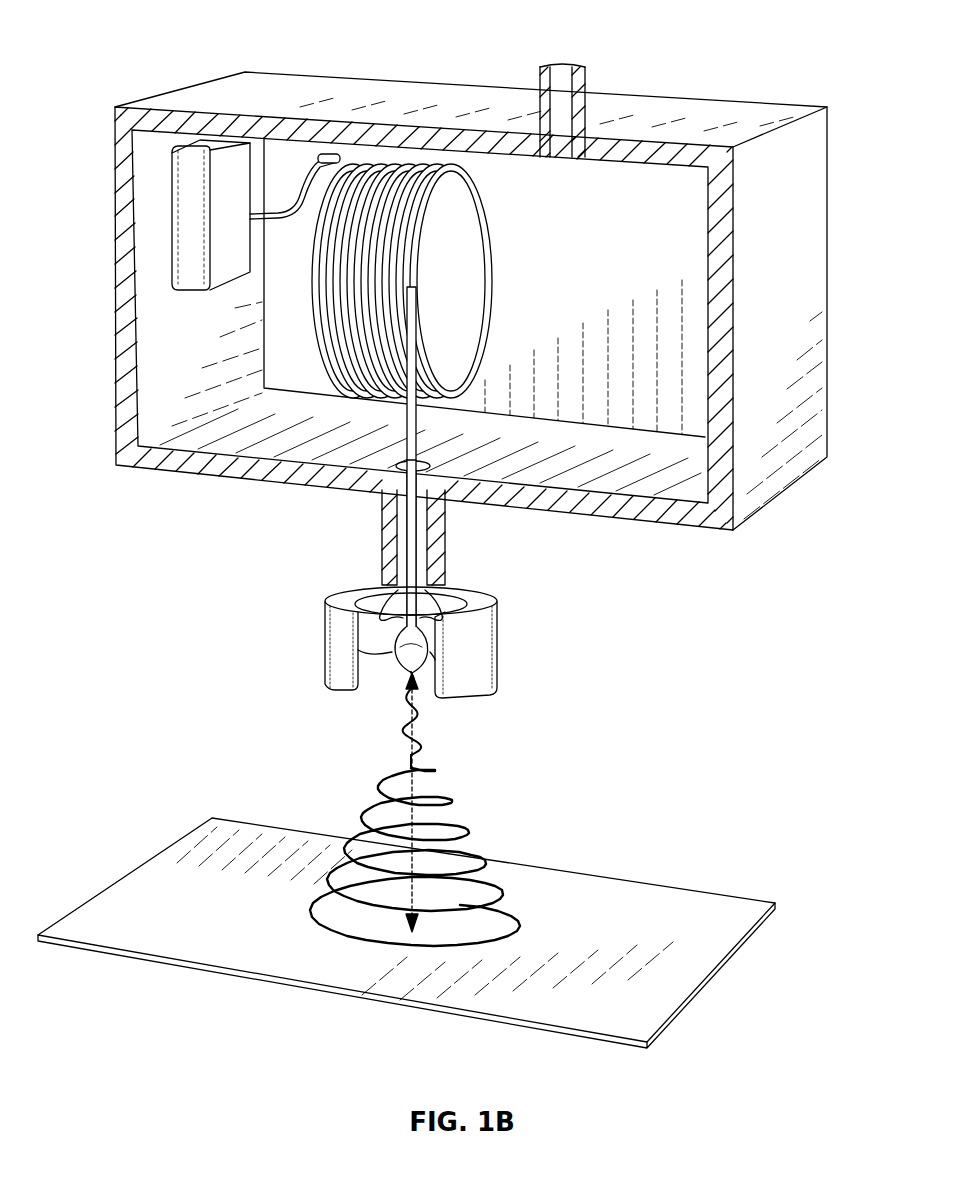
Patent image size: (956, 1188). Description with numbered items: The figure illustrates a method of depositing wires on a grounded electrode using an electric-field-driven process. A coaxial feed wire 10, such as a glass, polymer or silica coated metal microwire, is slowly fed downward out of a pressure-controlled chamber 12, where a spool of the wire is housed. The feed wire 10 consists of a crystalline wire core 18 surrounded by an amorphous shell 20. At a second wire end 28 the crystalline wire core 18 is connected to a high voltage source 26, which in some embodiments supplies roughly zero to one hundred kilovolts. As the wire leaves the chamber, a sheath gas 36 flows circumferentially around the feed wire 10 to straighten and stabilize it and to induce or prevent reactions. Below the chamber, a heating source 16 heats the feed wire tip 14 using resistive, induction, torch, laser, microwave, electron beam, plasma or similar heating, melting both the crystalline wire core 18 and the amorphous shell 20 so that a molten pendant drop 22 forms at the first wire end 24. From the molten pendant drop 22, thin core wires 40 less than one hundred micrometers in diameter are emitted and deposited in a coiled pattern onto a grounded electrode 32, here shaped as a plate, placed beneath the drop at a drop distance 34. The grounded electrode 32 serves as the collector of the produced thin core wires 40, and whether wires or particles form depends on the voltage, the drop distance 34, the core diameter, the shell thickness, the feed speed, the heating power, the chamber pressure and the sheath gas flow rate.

The coaxial feed wire 10 is at (406, 420).
The pressure-controlled chamber 12 is at (120, 236).
The feed wire tip 14 is at (403, 655).
The heating source 16 is at (333, 638).
The crystalline wire core 18 is at (362, 635).
The amorphous shell 20 is at (395, 647).
The molten pendant drop 22 is at (428, 650).
The first wire end 24 is at (425, 680).
The high voltage source 26 is at (193, 172).
The second wire end 28 is at (340, 152).
The grounded electrode 32 is at (158, 868).
The drop distance 34 is at (400, 790).
The sheath gas 36 is at (395, 470).
The thin core wires 40 is at (477, 833).